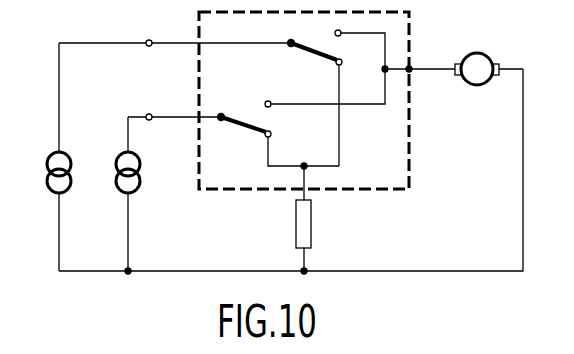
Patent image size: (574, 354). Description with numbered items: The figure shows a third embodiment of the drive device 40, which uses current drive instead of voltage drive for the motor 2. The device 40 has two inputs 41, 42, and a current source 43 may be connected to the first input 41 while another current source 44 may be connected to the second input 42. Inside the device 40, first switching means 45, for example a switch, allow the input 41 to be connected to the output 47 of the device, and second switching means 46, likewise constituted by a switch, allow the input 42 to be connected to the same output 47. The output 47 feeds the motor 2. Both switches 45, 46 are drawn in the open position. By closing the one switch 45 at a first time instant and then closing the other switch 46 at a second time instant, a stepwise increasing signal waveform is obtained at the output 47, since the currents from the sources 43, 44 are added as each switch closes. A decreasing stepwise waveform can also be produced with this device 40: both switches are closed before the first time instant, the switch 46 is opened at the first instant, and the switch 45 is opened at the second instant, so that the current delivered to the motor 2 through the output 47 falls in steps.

The motor 2 is at (487, 54).
The device 40 is at (411, 20).
The input 41 is at (146, 40).
The input 42 is at (149, 113).
The current source 43 is at (50, 151).
The current source 44 is at (120, 151).
The first switching means 45 is at (313, 55).
The second switching means 46 is at (243, 123).
The output 47 is at (411, 72).